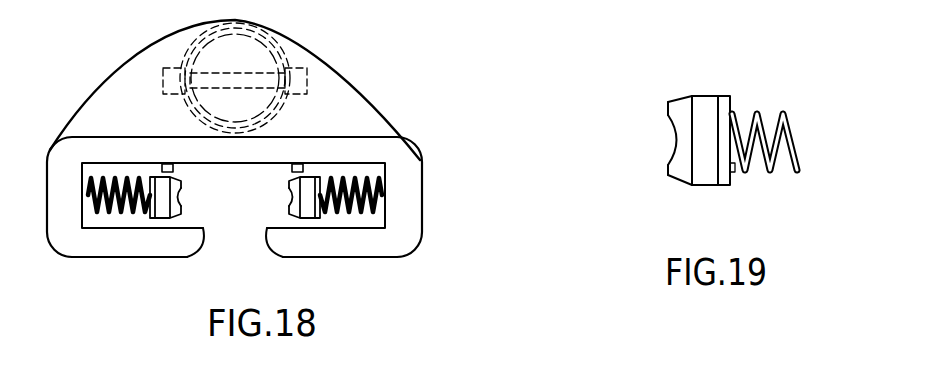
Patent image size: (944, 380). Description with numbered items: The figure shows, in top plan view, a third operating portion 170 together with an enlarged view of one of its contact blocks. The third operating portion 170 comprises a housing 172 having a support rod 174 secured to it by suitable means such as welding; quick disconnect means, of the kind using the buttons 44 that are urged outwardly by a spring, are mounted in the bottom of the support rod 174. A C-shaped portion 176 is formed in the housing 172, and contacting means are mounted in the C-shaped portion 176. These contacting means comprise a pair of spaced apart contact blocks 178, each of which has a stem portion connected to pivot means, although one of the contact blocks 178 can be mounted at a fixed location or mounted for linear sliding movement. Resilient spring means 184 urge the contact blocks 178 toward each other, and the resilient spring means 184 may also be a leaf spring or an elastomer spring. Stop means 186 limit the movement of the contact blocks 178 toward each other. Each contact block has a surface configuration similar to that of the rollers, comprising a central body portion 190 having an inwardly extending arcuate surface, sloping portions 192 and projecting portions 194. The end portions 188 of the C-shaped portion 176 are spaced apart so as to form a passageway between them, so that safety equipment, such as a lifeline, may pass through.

In FIG. 18, the buttons 44 is at (168, 68).
In FIG. 18, the third operating portion 170 is at (292, 138).
In FIG. 18, the housing 172 is at (348, 106).
In FIG. 18, the support rod 174 is at (277, 50).
In FIG. 18, the C-shaped portion 176 is at (410, 172).
In FIG. 18, the contact blocks 178 is at (287, 197).
In FIG. 18, the resilient spring means 184 is at (103, 212).
In FIG. 19, the resilient spring means 184 is at (760, 113).
In FIG. 18, the stop means 186 is at (165, 165).
In FIG. 18, the end portions 188 is at (288, 243).
In FIG. 18, the central body portion 190 is at (258, 257).
In FIG. 19, the central body portion 190 is at (678, 140).
In FIG. 19, the sloping portions 192 is at (681, 97).
In FIG. 19, the projecting portions 194 is at (668, 107).